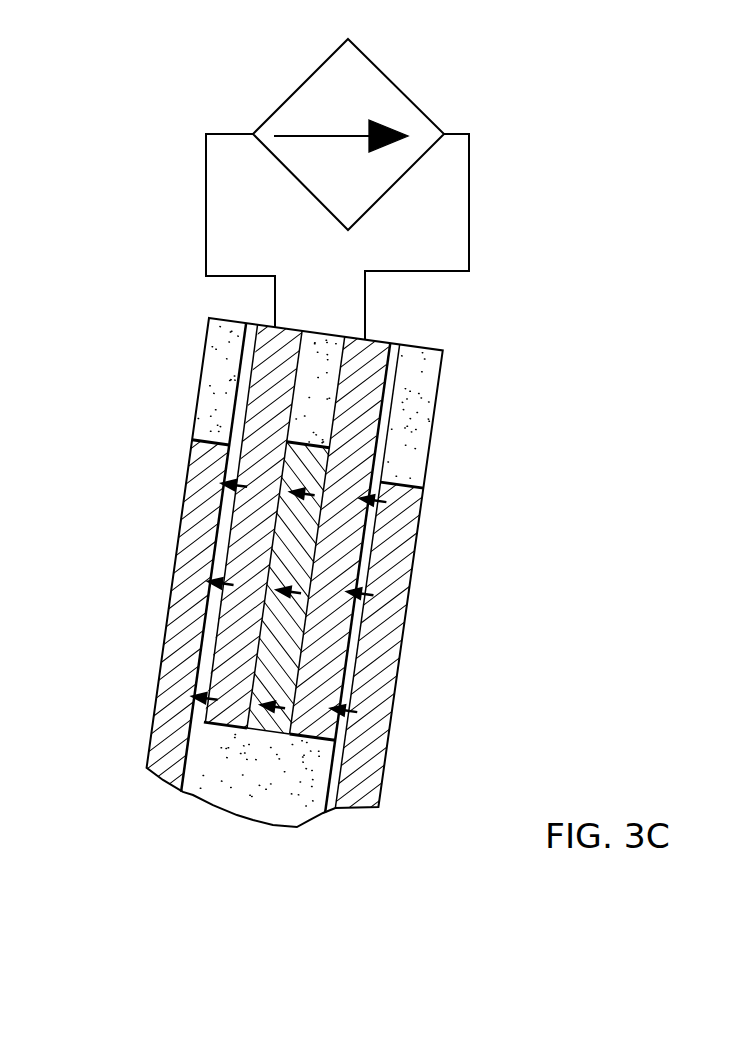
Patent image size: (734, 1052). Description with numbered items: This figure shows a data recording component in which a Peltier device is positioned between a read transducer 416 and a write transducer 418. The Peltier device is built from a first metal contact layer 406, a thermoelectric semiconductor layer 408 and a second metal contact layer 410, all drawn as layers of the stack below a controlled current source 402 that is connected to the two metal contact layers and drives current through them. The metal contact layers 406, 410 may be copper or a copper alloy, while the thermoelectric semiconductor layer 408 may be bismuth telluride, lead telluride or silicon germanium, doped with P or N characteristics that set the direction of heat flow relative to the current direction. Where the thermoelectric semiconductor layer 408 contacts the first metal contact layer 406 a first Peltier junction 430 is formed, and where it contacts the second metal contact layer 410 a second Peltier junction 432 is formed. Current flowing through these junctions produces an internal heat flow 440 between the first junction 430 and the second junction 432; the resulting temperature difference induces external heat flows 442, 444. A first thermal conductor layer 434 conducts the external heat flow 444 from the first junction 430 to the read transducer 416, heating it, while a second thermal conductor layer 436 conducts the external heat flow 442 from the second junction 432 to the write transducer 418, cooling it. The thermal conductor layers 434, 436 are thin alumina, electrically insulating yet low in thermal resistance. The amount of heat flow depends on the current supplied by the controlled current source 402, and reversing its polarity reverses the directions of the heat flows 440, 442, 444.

The controlled current source 402 is at (403, 92).
The first metal contact layer 406 is at (192, 793).
The thermoelectric semiconductor layer 408 is at (230, 814).
The second metal contact layer 410 is at (318, 740).
The read transducer 416 is at (163, 780).
The write transducer 418 is at (353, 810).
The first Peltier junction 430 is at (318, 554).
The second Peltier junction 432 is at (305, 632).
The first thermal conductor layer 434 is at (255, 324).
The second thermal conductor layer 436 is at (397, 345).
The internal heat flow 440 is at (272, 705).
The external heat flow 442 is at (342, 710).
The external heat flow 444 is at (203, 695).